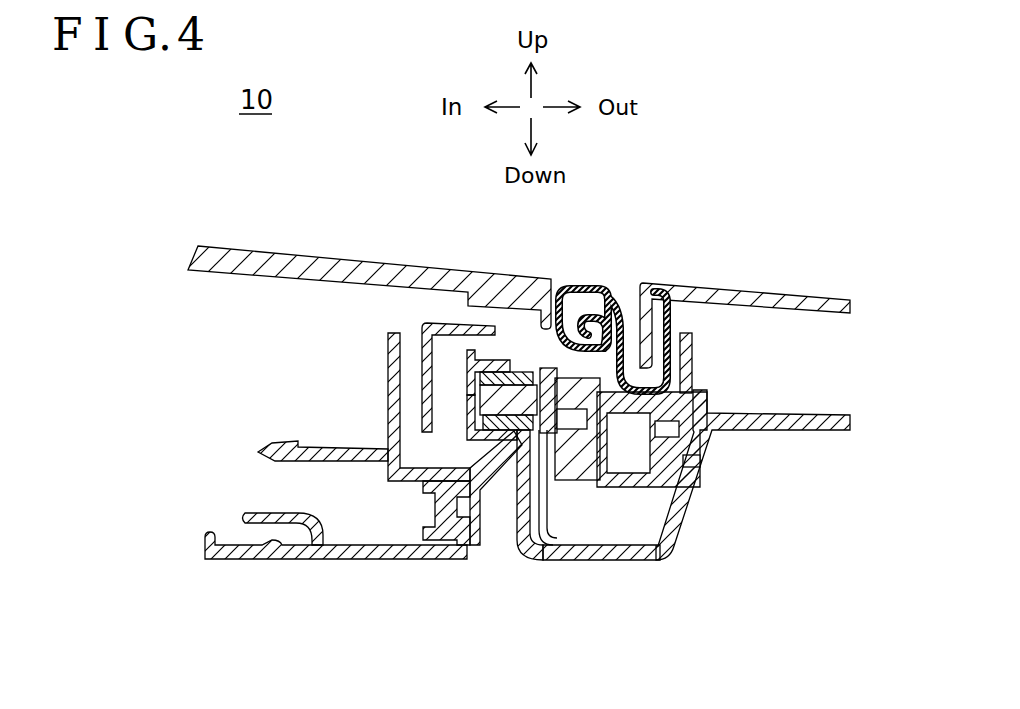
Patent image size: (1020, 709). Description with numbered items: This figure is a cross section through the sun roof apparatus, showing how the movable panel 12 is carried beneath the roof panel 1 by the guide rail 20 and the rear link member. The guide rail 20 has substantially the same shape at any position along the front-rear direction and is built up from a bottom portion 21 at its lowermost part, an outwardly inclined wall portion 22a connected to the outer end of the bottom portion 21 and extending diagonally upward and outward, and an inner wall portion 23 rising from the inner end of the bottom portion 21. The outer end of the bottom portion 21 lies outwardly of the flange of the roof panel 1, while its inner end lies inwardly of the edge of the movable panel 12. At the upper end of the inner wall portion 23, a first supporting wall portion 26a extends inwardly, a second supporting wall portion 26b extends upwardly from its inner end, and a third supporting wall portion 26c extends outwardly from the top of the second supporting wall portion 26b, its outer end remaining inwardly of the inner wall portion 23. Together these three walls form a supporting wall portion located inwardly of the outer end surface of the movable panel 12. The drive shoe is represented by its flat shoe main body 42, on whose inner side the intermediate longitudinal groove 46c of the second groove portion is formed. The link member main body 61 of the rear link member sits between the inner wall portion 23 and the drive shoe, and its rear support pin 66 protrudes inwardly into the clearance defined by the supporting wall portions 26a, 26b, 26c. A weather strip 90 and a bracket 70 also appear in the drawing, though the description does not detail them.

The roof panel 1 is at (721, 285).
The movable panel 12 is at (292, 247).
The guide rail 20 is at (432, 582).
The bottom portion 21 is at (596, 560).
The outwardly inclined wall portion 22a is at (697, 518).
The inner wall portion 23 is at (505, 518).
The first supporting wall portion 26a is at (413, 483).
The second supporting wall portion 26b is at (466, 405).
The third supporting wall portion 26c is at (493, 366).
The shoe main body 42 is at (578, 482).
The intermediate longitudinal groove 46c is at (598, 421).
The link member main body 61 is at (541, 561).
The rear support pin 66 is at (468, 384).
The L-bracket 70 is at (430, 323).
The weather strip seal 90 is at (602, 268).